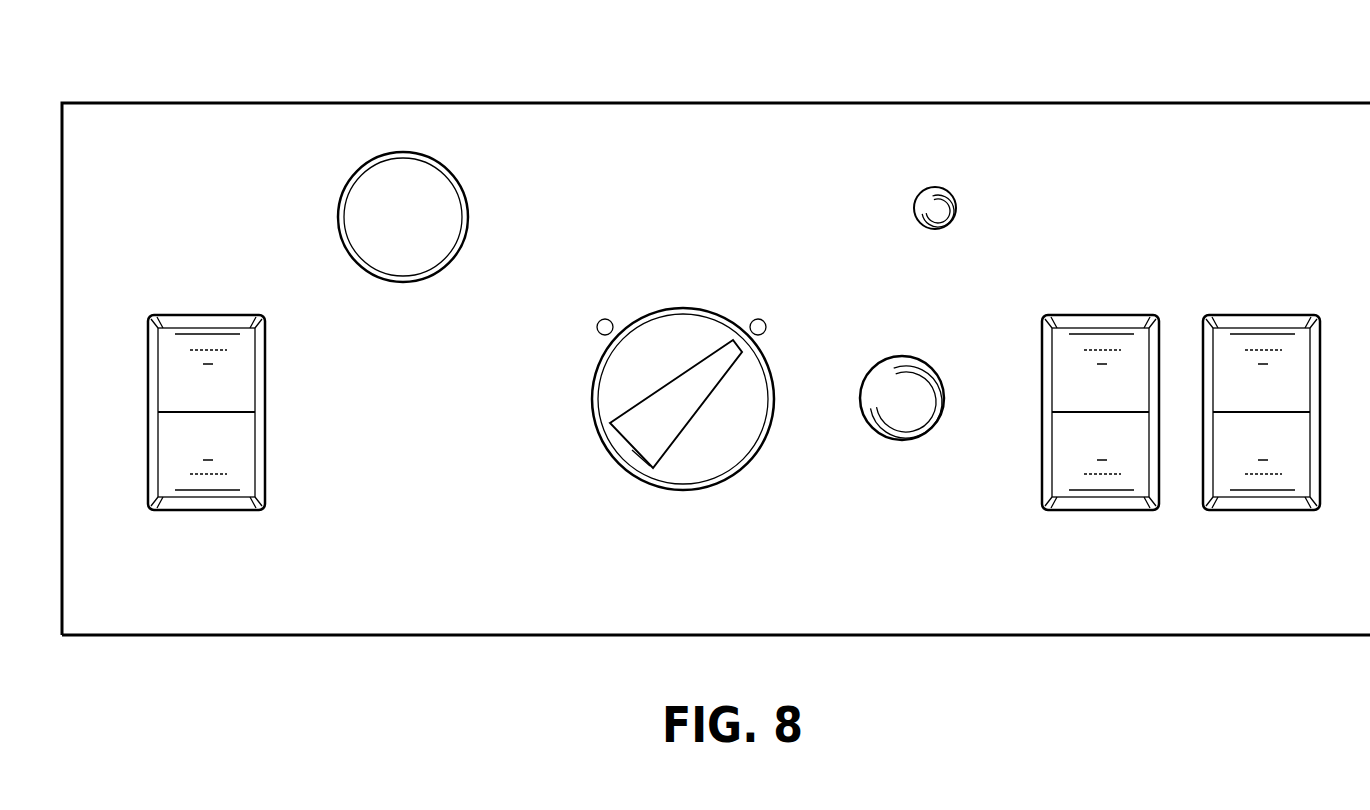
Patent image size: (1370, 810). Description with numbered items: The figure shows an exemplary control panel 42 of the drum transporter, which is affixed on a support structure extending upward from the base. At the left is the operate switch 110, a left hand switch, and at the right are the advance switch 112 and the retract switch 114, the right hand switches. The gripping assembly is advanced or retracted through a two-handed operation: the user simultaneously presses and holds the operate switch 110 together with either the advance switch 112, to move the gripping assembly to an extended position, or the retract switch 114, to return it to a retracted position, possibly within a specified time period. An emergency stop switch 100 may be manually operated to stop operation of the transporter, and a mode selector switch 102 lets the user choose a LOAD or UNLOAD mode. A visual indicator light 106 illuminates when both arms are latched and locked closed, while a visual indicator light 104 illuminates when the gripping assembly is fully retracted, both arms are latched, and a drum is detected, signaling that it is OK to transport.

The control panel 42 is at (733, 103).
The emergency stop switch 100 is at (433, 195).
The mode selector switch 102 is at (717, 453).
The visual indicator light 104 is at (917, 373).
The visual indicator light 106 is at (937, 203).
The operate switch 110 is at (212, 343).
The advance switch 112 is at (1108, 338).
The retract switch 114 is at (1265, 343).